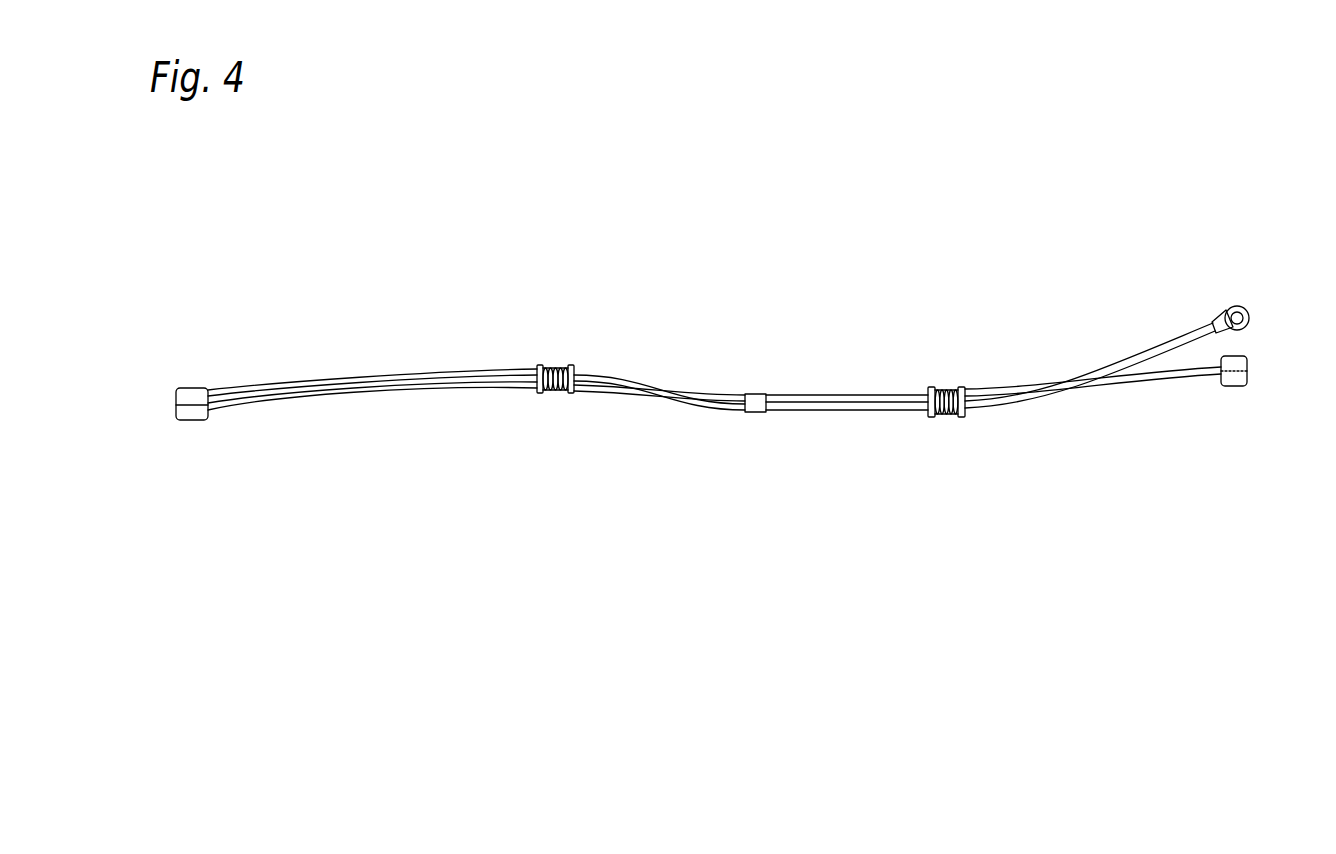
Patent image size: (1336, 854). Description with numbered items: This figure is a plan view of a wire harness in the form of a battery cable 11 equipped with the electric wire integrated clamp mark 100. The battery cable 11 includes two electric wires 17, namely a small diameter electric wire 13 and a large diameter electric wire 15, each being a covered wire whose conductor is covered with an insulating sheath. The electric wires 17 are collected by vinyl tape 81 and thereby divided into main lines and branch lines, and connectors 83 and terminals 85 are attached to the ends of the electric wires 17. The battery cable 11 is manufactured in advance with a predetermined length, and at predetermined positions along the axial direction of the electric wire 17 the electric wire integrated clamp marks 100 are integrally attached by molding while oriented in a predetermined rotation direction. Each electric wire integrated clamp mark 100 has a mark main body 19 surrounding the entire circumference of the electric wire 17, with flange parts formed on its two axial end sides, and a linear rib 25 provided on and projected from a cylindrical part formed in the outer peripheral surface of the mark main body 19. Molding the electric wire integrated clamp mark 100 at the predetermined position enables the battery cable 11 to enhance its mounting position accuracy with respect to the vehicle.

The battery cable 11 is at (568, 242).
The small diameter electric wire 13 is at (820, 395).
The large diameter electric wire 15 is at (435, 386).
The electric wire 17 is at (673, 381).
The mark main body 19 is at (564, 361).
The linear rib 25 is at (558, 394).
The vinyl tape 81 is at (757, 412).
The connector 83 is at (189, 388).
The terminal 85 is at (1236, 305).
The electric wire integrated clamp mark 100 is at (541, 353).